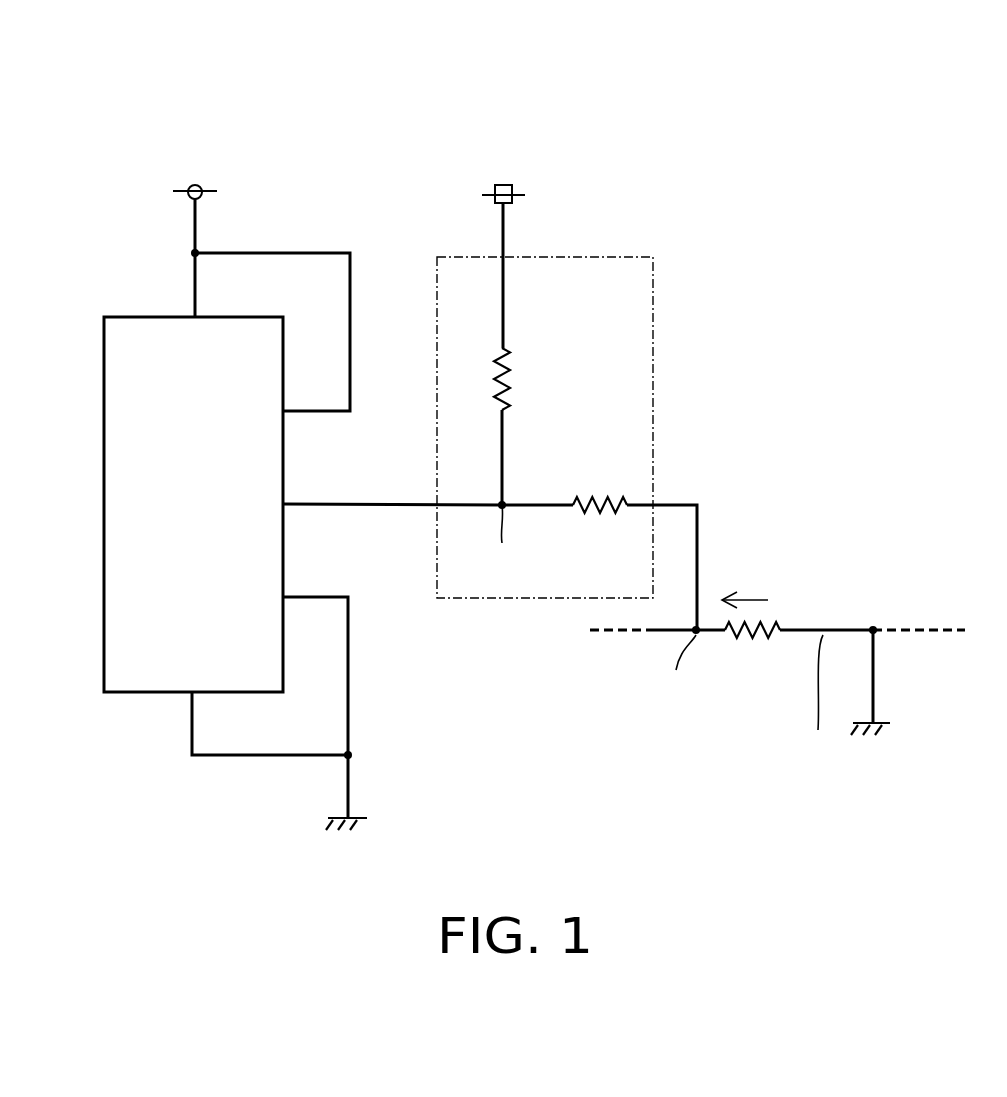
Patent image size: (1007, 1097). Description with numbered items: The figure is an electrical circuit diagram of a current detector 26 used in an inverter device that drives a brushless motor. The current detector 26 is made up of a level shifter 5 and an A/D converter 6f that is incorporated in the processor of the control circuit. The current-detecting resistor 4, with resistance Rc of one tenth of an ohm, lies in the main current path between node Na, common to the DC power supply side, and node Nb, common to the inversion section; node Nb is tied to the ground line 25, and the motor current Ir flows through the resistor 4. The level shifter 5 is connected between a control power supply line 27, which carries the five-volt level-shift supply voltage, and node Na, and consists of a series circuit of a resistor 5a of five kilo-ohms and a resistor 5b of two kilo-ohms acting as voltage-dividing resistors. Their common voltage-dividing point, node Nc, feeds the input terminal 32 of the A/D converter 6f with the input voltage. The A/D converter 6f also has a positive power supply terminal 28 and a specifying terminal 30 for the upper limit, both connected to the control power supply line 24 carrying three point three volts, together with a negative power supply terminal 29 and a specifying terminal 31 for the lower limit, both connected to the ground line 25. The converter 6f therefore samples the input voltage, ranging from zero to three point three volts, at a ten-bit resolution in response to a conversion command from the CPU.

The current-detecting resistor 4 is at (768, 622).
The level shifter 5 is at (655, 300).
The resistor 5a is at (495, 380).
The resistor 5b is at (600, 500).
The A/D converter 6f is at (104, 345).
The control power supply line 24 is at (205, 190).
The ground line 25 is at (355, 818).
The current detector 26 is at (403, 216).
The control power supply line 27 is at (513, 192).
The positive power supply terminal 28 is at (190, 313).
The negative power supply terminal 29 is at (190, 695).
The specifying terminal 30 is at (283, 400).
The specifying terminal 31 is at (283, 593).
The input terminal 32 is at (283, 500).